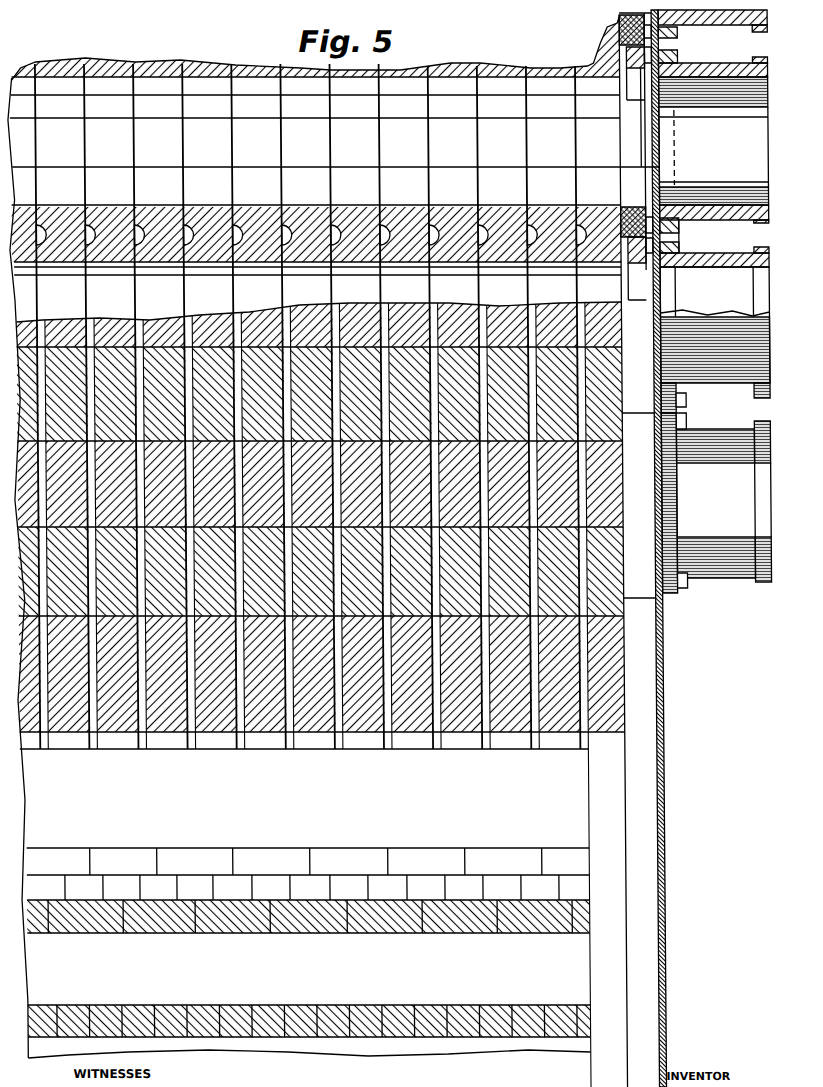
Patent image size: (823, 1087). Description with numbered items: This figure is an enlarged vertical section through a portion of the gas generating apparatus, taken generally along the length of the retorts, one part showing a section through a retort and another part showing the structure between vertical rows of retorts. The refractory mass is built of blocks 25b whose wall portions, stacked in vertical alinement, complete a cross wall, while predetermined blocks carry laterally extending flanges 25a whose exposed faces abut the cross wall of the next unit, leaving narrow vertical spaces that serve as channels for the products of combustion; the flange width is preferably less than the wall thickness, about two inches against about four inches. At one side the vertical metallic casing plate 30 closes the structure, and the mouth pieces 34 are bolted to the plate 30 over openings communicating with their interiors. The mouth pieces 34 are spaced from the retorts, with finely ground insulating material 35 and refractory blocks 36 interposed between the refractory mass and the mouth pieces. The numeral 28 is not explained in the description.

The laterally extending flange 25a is at (429, 225).
The refractory block 25b is at (478, 218).
The wall of blocks 28 is at (376, 630).
The casing plate 30 is at (658, 731).
The mouth piece 34 is at (715, 301).
The finely ground insulating material 35 is at (631, 207).
The refractory block 36 is at (636, 128).